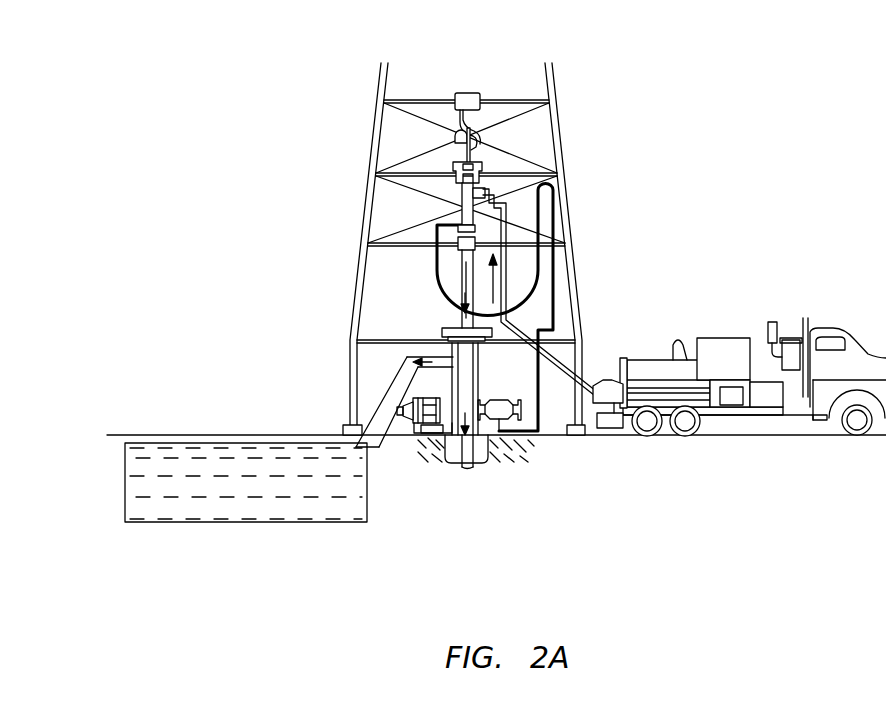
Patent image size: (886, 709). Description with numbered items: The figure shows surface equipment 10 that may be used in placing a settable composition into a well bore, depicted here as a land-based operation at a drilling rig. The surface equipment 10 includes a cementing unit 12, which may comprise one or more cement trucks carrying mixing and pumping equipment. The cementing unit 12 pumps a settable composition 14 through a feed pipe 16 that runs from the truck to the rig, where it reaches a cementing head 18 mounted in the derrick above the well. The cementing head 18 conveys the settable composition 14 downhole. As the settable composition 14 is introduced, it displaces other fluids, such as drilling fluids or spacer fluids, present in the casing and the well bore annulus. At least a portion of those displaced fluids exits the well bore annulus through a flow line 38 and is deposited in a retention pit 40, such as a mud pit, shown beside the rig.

The surface equipment 10 is at (783, 99).
The cementing unit 12 is at (796, 426).
The settable composition 14 is at (461, 278).
The feed pipe 16 is at (550, 355).
The cementing head 18 is at (501, 162).
The flow line 38 is at (387, 430).
The retention pit 40 is at (172, 522).